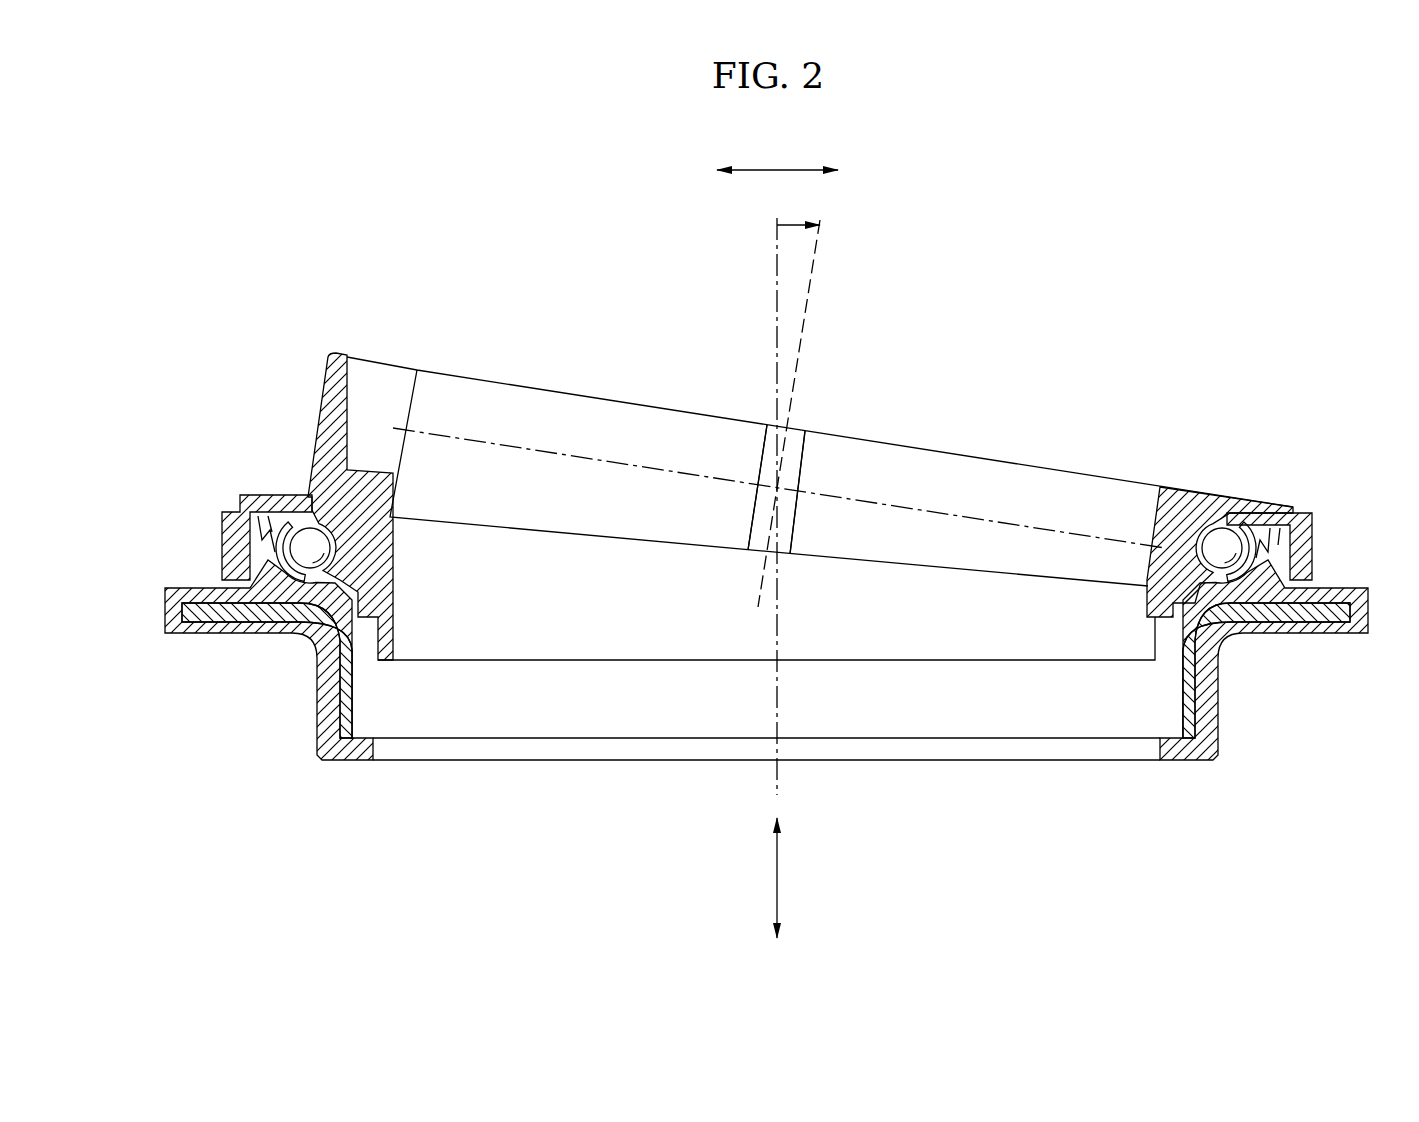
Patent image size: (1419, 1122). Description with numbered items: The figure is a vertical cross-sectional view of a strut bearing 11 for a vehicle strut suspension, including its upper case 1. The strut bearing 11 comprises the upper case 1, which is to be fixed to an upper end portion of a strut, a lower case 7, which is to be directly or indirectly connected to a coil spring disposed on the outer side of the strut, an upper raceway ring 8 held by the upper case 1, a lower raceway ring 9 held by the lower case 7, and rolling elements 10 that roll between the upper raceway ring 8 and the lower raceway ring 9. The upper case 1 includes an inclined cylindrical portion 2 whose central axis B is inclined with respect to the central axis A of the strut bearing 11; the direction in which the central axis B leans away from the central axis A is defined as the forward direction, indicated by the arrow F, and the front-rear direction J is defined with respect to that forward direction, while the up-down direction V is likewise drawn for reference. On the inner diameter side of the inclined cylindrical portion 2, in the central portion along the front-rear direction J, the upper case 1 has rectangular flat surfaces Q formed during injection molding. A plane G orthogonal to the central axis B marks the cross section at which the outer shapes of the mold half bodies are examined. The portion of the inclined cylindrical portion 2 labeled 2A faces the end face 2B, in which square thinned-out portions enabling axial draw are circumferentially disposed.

The upper case 1 is at (475, 355).
The inclined cylindrical portion 2 is at (744, 449).
The shaft first end portion 2A is at (968, 473).
The end face 2B is at (383, 350).
The lower case 7 is at (333, 768).
The upper raceway ring 8 is at (1202, 527).
The lower raceway ring 9 is at (1243, 560).
The rolling elements 10 is at (1233, 533).
The strut bearing 11 is at (540, 285).
The central axis of the strut bearing A is at (777, 265).
The central axis of the inclined cylindrical portion B is at (805, 327).
The forward direction F is at (798, 205).
The plane orthogonal to the central axis B G is at (577, 455).
The front-rear direction J is at (777, 153).
The rectangular flat surfaces Q is at (753, 510).
The vertical direction V is at (792, 878).